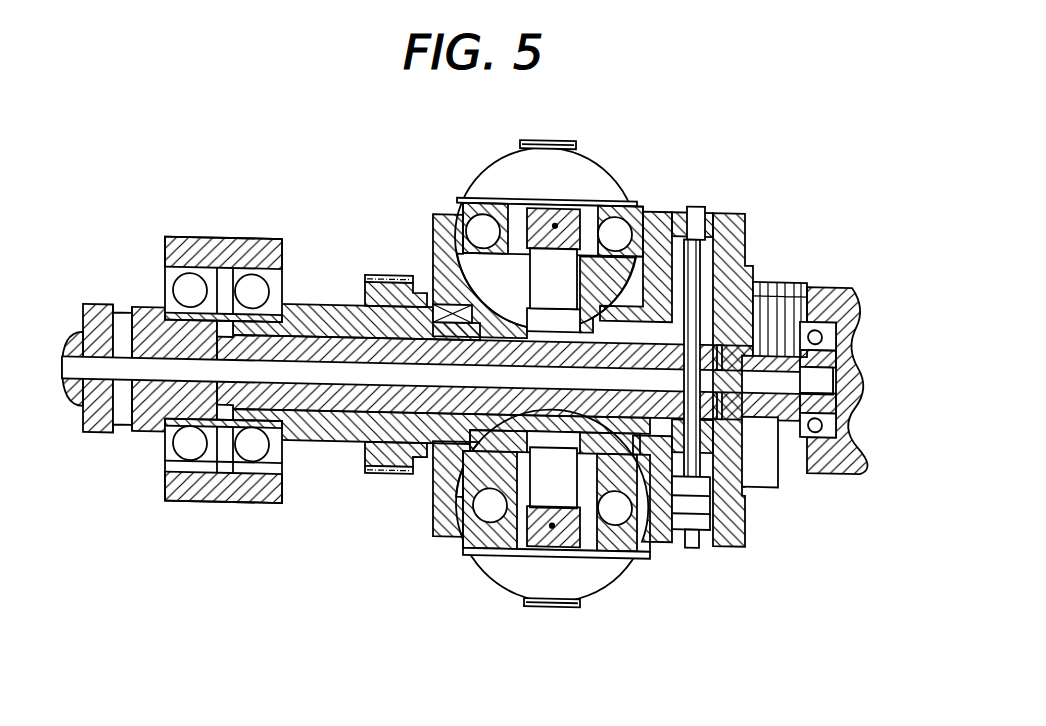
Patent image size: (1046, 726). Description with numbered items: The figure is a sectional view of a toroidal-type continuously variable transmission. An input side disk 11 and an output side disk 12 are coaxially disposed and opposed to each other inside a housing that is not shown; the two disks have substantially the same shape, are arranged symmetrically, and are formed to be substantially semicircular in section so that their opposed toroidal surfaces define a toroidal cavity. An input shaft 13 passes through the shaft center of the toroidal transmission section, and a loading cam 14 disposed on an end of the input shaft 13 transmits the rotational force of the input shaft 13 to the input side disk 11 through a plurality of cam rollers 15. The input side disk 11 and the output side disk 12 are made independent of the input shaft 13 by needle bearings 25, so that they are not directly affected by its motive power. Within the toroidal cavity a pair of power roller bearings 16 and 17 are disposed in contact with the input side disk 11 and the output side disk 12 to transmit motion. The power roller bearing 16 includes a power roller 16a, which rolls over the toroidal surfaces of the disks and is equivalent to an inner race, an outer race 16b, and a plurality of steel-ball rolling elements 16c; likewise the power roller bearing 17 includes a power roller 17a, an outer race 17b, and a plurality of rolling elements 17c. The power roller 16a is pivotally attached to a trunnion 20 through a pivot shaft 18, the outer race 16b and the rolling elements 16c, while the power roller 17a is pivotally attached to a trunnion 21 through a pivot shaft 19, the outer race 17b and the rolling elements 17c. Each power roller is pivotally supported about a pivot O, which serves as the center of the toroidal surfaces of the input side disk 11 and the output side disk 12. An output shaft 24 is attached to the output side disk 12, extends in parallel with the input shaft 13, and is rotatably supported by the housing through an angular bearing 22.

The input side disk 11 is at (668, 226).
The output side disk 12 is at (438, 237).
The input shaft 13 is at (140, 324).
The loading cam 14 is at (745, 532).
The cam rollers 15 is at (697, 530).
The power roller bearing 16 is at (450, 194).
The power roller 16a is at (507, 262).
The outer race 16b is at (613, 196).
The rolling elements 16c is at (641, 201).
The power roller bearing 17 is at (517, 632).
The power roller 17a is at (623, 484).
The outer race 17b is at (480, 557).
The rolling elements 17c is at (485, 543).
The pivot shaft 18 is at (540, 212).
The pivot shaft 19 is at (532, 532).
The trunnion 20 is at (600, 177).
The trunnion 21 is at (585, 580).
The angular bearing 22 is at (252, 284).
The output shaft 24 is at (360, 293).
The needle bearings 25 is at (492, 418).
The pivot O is at (556, 222).